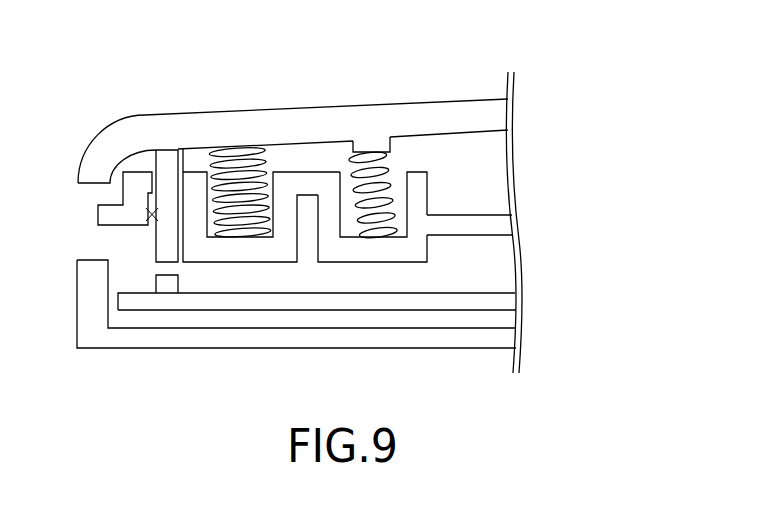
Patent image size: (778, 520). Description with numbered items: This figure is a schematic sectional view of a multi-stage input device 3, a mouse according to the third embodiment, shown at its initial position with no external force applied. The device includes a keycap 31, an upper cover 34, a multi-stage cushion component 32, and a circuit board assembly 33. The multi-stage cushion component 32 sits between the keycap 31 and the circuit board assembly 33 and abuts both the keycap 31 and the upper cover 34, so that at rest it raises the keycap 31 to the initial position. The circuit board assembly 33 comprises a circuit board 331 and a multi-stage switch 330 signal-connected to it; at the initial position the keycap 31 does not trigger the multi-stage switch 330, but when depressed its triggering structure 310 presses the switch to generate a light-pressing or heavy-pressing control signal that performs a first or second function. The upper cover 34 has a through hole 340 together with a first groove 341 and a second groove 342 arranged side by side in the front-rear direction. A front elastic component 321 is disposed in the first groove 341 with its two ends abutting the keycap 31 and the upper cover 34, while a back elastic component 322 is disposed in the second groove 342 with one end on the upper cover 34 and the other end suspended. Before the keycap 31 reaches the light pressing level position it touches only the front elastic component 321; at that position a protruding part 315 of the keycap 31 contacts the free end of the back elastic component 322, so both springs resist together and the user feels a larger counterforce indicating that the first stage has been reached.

The multi-stage input device 3 is at (219, 61).
The keycap 31 is at (298, 114).
The triggering structure 310 is at (168, 192).
The protruding part 315 is at (372, 143).
The multi-stage cushion component 32 is at (592, 13).
The front elastic component 321 is at (220, 165).
The back elastic component 322 is at (355, 210).
The circuit board assembly 33 is at (592, 95).
The multi-stage switch 330 is at (160, 285).
The circuit board 331 is at (425, 302).
The upper cover 34 is at (490, 224).
The through hole 340 is at (150, 219).
The first groove 341 is at (275, 192).
The second groove 342 is at (405, 220).